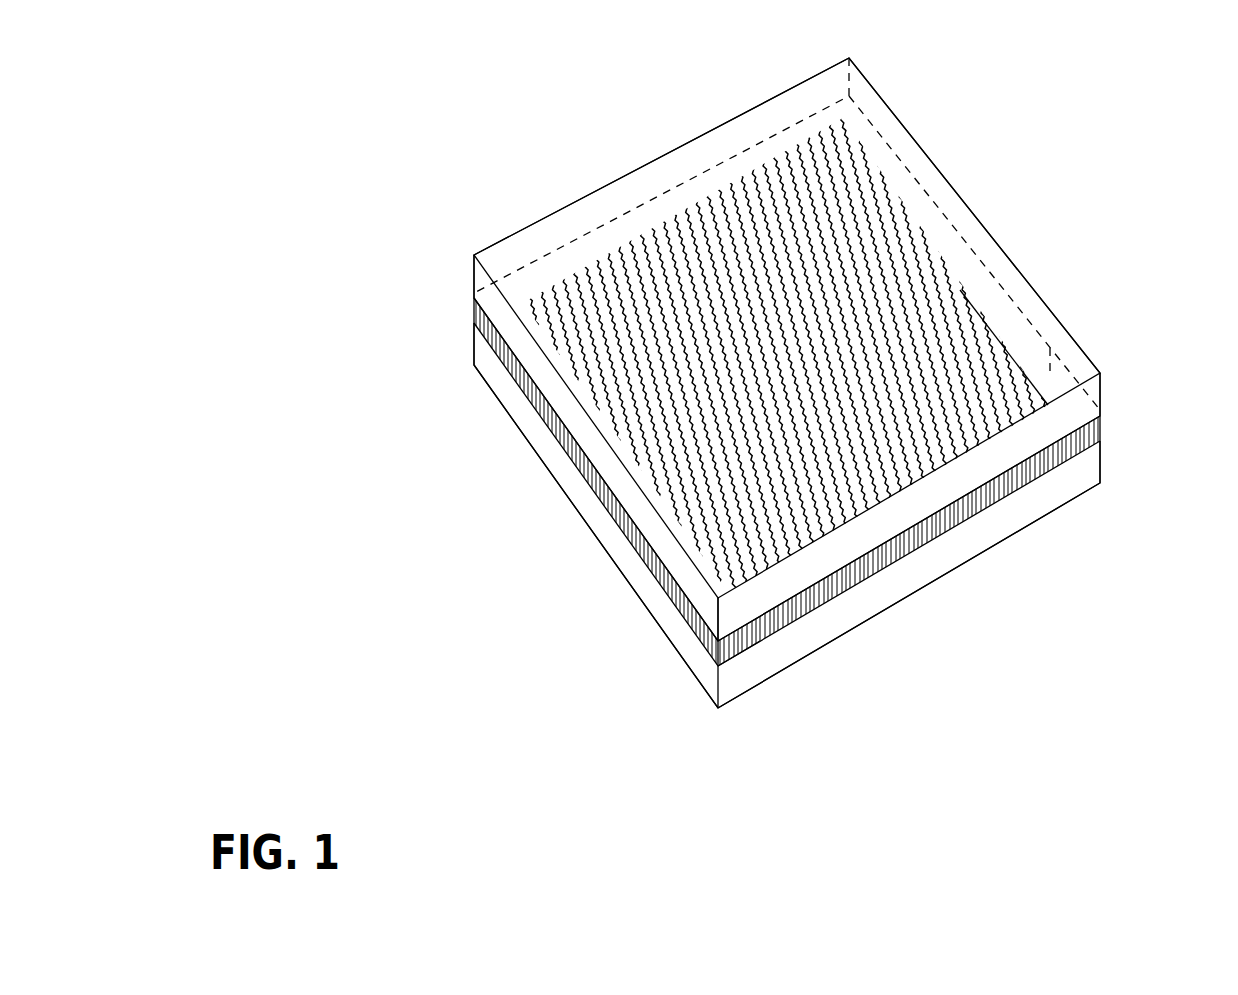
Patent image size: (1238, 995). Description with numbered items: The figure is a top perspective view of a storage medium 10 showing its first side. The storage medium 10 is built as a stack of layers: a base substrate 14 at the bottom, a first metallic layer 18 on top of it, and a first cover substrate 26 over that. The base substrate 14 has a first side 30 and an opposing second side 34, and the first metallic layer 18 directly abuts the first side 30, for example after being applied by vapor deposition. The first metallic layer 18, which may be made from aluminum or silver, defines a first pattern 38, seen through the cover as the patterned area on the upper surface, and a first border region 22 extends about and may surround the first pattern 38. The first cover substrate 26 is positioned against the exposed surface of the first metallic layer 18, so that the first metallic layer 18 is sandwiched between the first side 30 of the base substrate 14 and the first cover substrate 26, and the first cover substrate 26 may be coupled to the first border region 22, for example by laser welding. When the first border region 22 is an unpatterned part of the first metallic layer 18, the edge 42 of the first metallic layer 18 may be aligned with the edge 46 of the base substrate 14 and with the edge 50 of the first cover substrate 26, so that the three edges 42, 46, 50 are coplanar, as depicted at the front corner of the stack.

The storage medium 10 is at (448, 134).
The base substrate 14 is at (1110, 434).
The first metallic layer 18 is at (1110, 413).
The first border region 22 is at (1072, 330).
The first cover substrate 26 is at (616, 170).
The first side 30 is at (1047, 403).
The second side 34 is at (1087, 392).
The first pattern 38 is at (940, 276).
The edge 42 is at (747, 657).
The edge 46 is at (750, 648).
The edge 50 is at (735, 607).